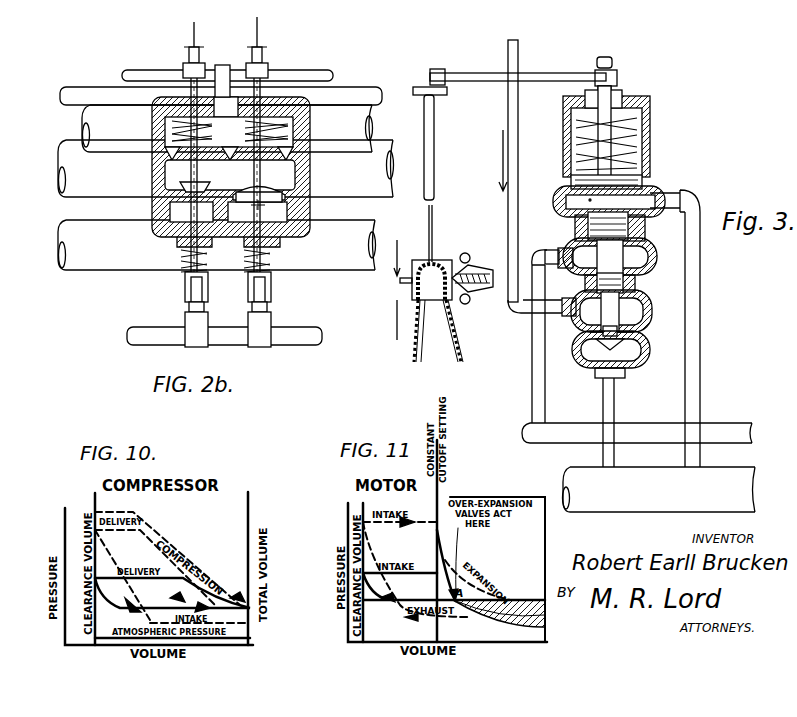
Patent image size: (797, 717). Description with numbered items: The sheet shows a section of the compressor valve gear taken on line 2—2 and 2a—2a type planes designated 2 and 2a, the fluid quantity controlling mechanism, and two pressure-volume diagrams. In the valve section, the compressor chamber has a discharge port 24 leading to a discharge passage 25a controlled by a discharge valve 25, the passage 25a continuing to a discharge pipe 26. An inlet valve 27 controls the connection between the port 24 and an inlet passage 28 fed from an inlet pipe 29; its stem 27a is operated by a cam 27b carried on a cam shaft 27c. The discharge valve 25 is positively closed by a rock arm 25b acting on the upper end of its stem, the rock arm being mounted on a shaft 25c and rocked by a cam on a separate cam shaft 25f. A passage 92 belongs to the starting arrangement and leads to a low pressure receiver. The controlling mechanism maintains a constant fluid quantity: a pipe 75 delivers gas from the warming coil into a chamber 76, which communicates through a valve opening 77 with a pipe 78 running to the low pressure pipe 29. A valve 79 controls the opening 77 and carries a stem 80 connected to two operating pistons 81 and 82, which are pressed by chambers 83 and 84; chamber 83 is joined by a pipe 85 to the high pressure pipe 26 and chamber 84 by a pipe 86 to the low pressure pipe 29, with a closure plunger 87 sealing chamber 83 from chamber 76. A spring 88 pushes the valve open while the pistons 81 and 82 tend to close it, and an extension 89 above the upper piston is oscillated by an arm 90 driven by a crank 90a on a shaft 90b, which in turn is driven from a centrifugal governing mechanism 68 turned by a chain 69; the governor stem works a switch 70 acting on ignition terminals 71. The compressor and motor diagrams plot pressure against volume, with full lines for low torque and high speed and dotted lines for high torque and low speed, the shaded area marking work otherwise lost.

In FIG. 2B, the valve stem 2 is at (255, 194).
In FIG. 2B, the valve stem 2a is at (193, 196).
In FIG. 2B, the discharge port 24 is at (222, 156).
In FIG. 2B, the discharge valve 25 is at (198, 71).
In FIG. 2B, the discharge passage 25a is at (156, 131).
In FIG. 2B, the rock arm 25b is at (189, 50).
In FIG. 2B, the shaft 25c is at (313, 73).
In FIG. 2B, the cam shaft 25f is at (352, 92).
In FIG. 2B, the inlet valve 27 is at (274, 191).
In FIG. 2B, the valve stem 27a is at (264, 237).
In FIG. 2B, the cam 27b is at (268, 319).
In FIG. 2B, the cam shaft 27c is at (298, 333).
In FIG. 2B, the inlet passage 28 is at (286, 214).
In FIG. 2B, the inlet pipe 29 is at (98, 266).
In FIG. 3, the inlet pipe 29 is at (680, 496).
In FIG. 2B, the passage 92 is at (174, 215).
In FIG. 3, the discharge pipe 26 is at (527, 431).
In FIG. 3, the centrifugal governing mechanism 68 is at (468, 256).
In FIG. 3, the chain 69 is at (463, 347).
In FIG. 3, the switch 70 is at (410, 281).
In FIG. 3, the terminals 71 is at (408, 272).
In FIG. 3, the pipe 75 is at (510, 130).
In FIG. 3, the chamber 76 is at (641, 314).
In FIG. 3, the valve opening 77 is at (626, 336).
In FIG. 3, the pipe 78 is at (613, 417).
In FIG. 3, the valve 79 is at (593, 326).
In FIG. 3, the stem 80 is at (622, 298).
In FIG. 3, the operating piston 81 is at (630, 243).
In FIG. 3, the operating piston 82 is at (642, 174).
In FIG. 3, the chamber 83 is at (636, 256).
In FIG. 3, the chamber 84 is at (574, 202).
In FIG. 3, the pipe 85 is at (536, 361).
In FIG. 3, the pipe 86 is at (698, 384).
In FIG. 3, the closure plunger 87 is at (588, 280).
In FIG. 3, the spring 88 is at (642, 121).
In FIG. 3, the extension 89 is at (606, 99).
In FIG. 3, the arm 90 is at (547, 76).
In FIG. 3, the crank 90a is at (447, 91).
In FIG. 3, the shaft 90b is at (432, 138).